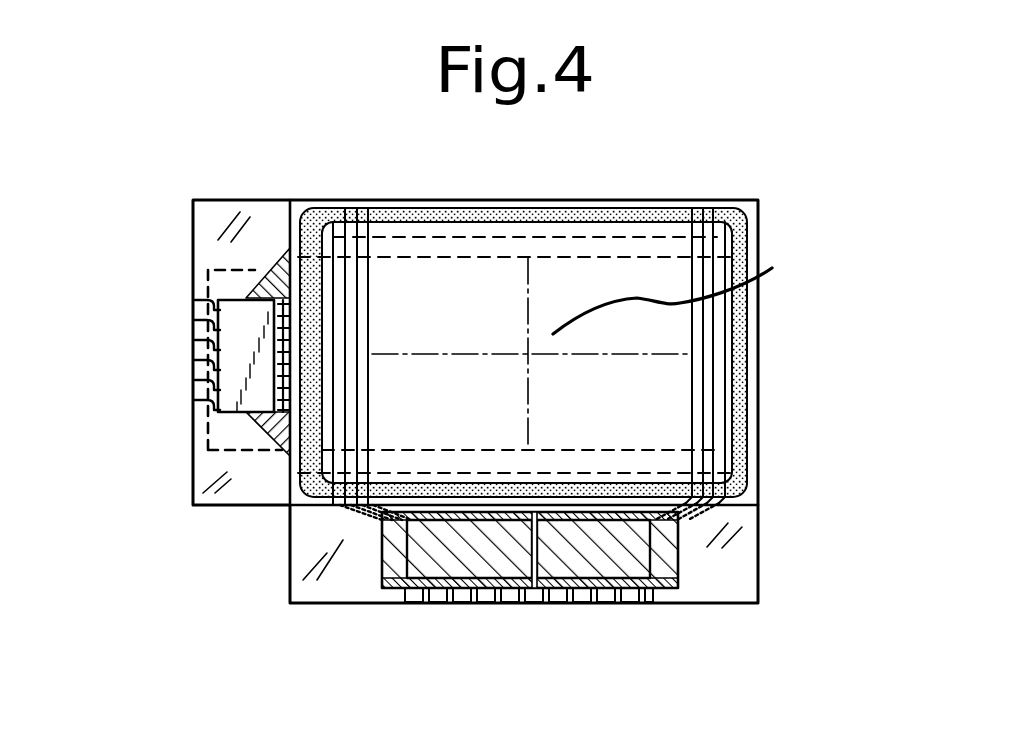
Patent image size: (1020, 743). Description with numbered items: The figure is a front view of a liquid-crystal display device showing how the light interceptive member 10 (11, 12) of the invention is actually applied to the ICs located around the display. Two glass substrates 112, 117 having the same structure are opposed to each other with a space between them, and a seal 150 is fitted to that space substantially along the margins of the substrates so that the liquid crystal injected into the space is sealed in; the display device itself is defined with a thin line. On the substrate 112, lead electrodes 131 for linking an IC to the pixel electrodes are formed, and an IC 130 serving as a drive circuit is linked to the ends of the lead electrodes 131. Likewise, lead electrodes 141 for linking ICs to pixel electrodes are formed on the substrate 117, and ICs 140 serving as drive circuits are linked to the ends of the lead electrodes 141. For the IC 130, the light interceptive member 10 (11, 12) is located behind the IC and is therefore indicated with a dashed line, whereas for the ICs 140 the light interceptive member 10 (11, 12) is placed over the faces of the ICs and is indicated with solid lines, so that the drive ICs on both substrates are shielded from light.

The light interceptive member 10 is at (473, 404).
The light interceptive member 11 is at (473, 404).
The light interceptive member 12 is at (228, 253).
The substrate 112 is at (222, 202).
The substrate 117 is at (288, 563).
The IC 130 is at (236, 402).
The lead electrodes 131 is at (285, 257).
The ICs 140 is at (457, 548).
The lead electrodes 141 is at (353, 514).
The seal 150 is at (745, 340).